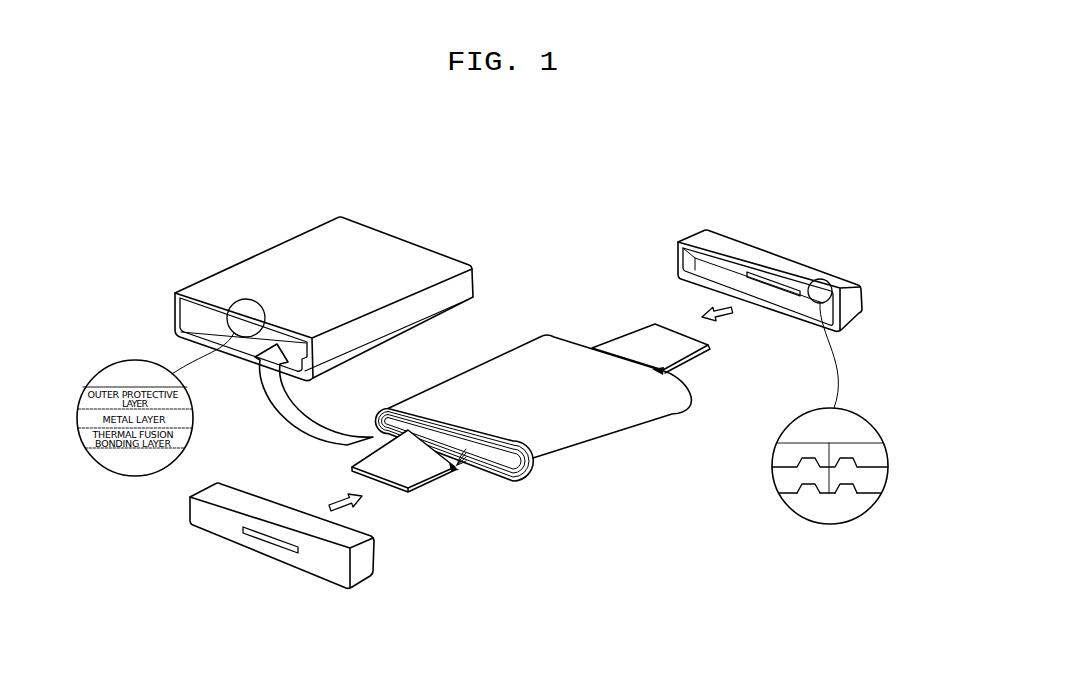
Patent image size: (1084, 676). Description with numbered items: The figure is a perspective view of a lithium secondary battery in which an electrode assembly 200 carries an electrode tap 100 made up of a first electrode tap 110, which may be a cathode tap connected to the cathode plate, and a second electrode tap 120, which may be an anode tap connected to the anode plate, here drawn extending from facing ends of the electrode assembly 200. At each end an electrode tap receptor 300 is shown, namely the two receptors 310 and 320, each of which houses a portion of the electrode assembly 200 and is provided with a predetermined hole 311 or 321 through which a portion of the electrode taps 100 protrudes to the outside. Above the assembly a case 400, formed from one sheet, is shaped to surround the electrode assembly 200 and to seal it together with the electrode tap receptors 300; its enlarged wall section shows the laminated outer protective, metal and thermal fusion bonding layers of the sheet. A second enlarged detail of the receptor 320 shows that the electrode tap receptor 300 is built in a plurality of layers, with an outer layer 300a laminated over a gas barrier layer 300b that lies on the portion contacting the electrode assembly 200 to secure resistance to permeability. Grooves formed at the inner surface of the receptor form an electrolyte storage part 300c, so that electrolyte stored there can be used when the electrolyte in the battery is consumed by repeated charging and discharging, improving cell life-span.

The electrode tap 100 is at (556, 425).
The first electrode tap 110 is at (412, 472).
The second electrode tap 120 is at (685, 347).
The electrode assembly 200 is at (600, 430).
The electrode tap receptor 300 is at (523, 388).
The electrode tap receptor 310 is at (266, 541).
The hole 311 is at (270, 543).
The electrode tap receptor 320 is at (770, 254).
The hole 321 is at (774, 282).
The outer layer 300a is at (788, 453).
The gas barrier layer 300b is at (788, 480).
The electrolyte storage part 300c is at (848, 490).
The case 400 is at (283, 268).